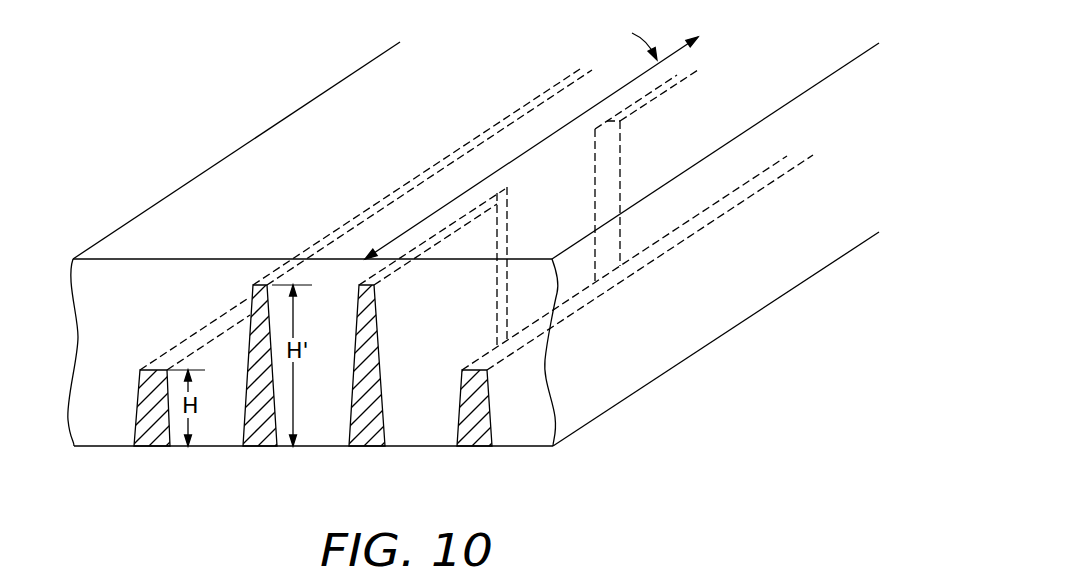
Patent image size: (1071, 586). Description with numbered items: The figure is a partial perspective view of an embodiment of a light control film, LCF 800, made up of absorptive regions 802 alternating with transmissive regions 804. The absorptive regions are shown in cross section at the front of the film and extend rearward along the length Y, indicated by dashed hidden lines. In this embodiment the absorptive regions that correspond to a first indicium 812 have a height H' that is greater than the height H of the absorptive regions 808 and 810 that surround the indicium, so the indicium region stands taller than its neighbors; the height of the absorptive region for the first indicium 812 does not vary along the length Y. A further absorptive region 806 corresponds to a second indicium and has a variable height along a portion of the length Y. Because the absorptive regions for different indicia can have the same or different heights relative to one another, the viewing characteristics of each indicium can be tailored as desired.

The light control film (LCF) 800 is at (136, 141).
The absorptive regions 802 is at (262, 447).
The transmissive regions 804 is at (333, 447).
The absorptive region corresponding to a second indicium 806 is at (368, 340).
The absorptive region surrounding the indicium 808 is at (472, 447).
The absorptive region surrounding the indicium 810 is at (152, 447).
The first indicium 812 is at (405, 186).